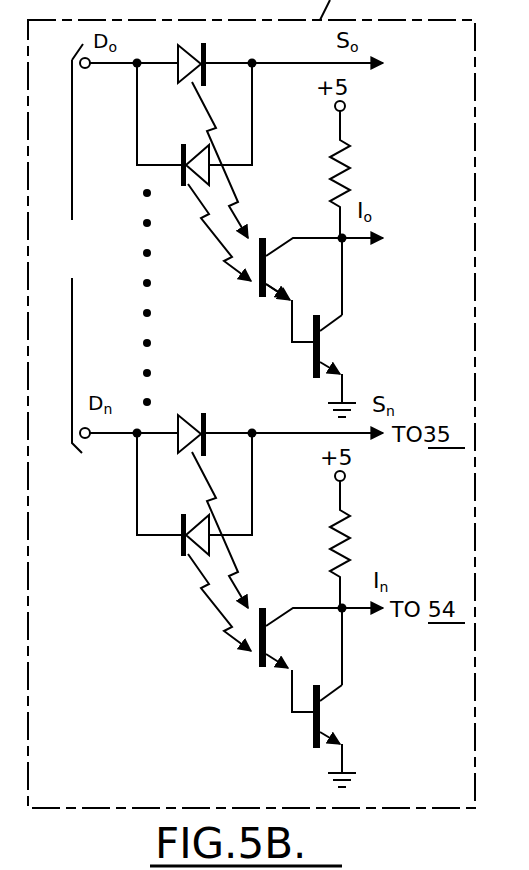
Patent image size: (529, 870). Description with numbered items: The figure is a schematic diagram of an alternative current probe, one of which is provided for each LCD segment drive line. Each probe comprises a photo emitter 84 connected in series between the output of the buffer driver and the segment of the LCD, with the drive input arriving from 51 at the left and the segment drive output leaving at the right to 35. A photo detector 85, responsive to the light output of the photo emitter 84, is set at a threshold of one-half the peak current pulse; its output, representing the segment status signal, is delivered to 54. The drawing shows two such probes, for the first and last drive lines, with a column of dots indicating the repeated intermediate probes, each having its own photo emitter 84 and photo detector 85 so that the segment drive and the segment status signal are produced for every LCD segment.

The photo emitter 84 is at (127, 122).
The photo detector 85 is at (264, 318).
The circuit 35 is at (465, 78).
The circuit 51 is at (97, 273).
The circuit 54 is at (465, 253).